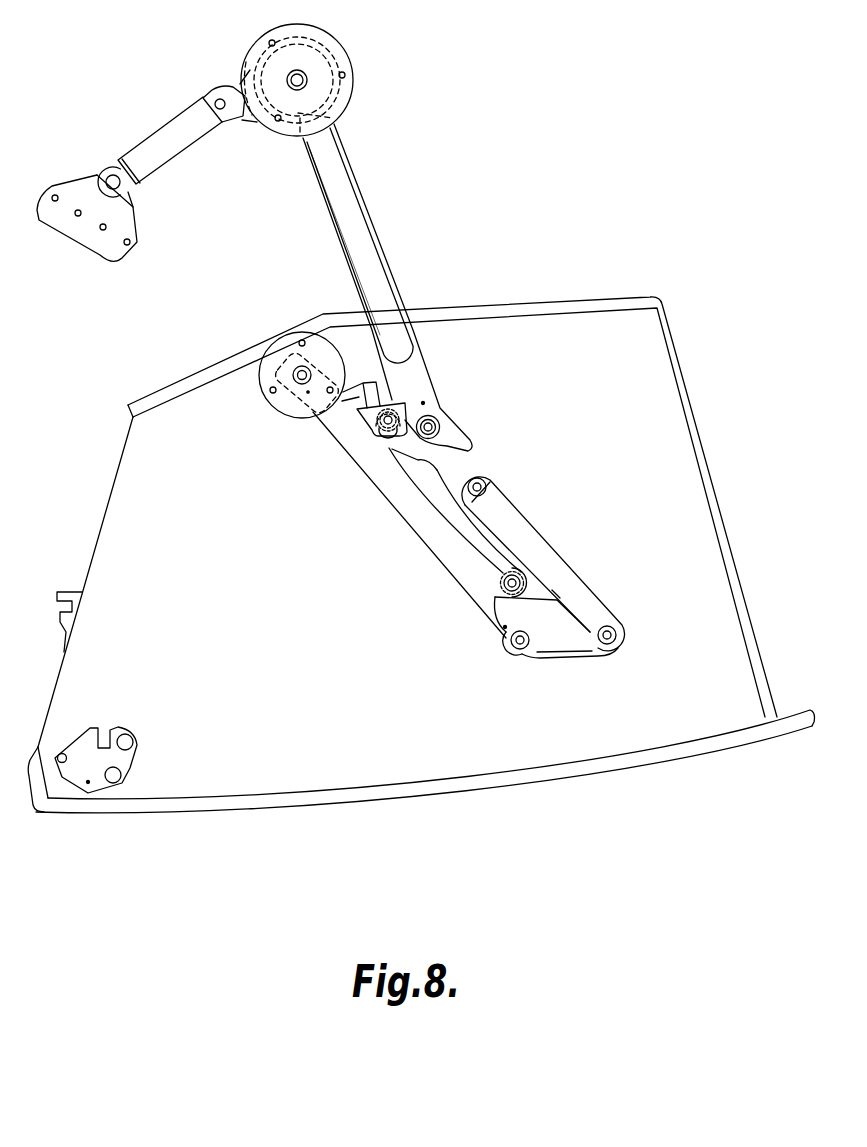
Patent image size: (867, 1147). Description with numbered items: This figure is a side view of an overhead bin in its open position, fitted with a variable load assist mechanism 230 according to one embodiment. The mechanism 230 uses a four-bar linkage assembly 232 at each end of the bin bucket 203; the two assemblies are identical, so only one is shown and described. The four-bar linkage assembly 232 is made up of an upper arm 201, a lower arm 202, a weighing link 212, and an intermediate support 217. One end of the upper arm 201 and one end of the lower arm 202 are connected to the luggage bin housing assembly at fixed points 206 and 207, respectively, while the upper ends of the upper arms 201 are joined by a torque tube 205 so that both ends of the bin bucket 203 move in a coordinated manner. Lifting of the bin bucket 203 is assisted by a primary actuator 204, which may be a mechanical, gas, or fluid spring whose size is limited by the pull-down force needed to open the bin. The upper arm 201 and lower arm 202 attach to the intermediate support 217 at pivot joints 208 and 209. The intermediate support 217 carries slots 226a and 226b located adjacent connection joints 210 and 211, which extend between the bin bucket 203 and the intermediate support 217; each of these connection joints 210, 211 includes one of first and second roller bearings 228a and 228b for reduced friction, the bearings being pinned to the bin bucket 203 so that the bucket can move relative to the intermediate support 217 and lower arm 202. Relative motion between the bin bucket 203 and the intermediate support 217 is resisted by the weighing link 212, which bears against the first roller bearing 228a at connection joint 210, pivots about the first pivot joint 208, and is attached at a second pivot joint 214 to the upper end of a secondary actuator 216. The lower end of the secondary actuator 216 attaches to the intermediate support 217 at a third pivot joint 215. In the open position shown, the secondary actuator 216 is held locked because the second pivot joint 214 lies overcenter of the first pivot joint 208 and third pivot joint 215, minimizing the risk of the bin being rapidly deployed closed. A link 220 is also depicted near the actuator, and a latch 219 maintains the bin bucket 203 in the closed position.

The upper arm 201 is at (367, 207).
The lower arm 202 is at (335, 447).
The bin bucket 203 is at (103, 518).
The primary actuator 204 is at (157, 127).
The torque tube 205 is at (320, 44).
The fixed point 206 is at (293, 77).
The fixed point 207 is at (300, 373).
The pivot joint 208 is at (433, 425).
The pivot joint 209 is at (516, 646).
The connection joint 210 is at (358, 420).
The connection joint 211 is at (507, 584).
The weighing link 212 is at (427, 469).
The second pivot joint 214 is at (481, 486).
The third pivot joint 215 is at (612, 639).
The secondary actuator 216 is at (523, 508).
The intermediate support 217 is at (567, 658).
The latch 219 is at (113, 790).
The connecting link 220 is at (552, 590).
The slot 226a is at (381, 432).
The slot 226b is at (500, 600).
The first roller bearing 228a is at (397, 403).
The second roller bearing 228b is at (514, 578).
The variable load assist mechanism 230 is at (432, 287).
The four-bar linkage assembly 232 is at (333, 224).